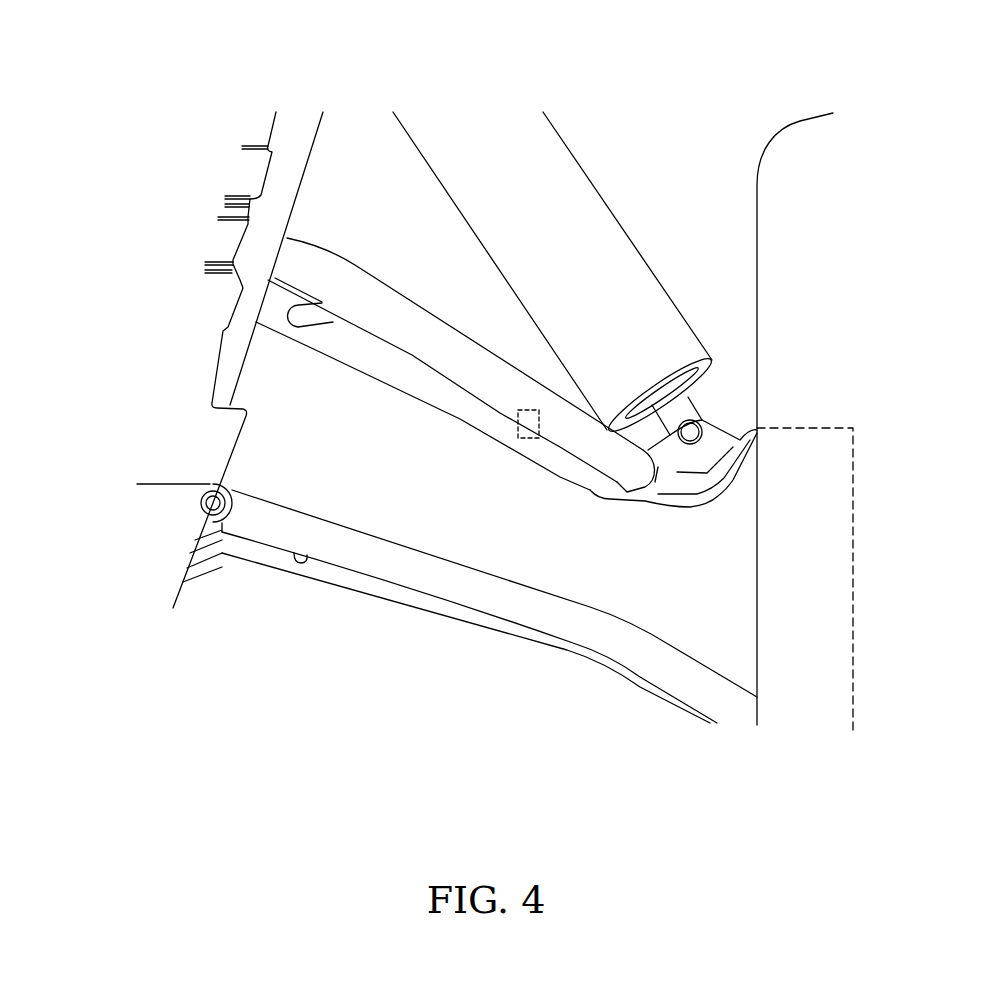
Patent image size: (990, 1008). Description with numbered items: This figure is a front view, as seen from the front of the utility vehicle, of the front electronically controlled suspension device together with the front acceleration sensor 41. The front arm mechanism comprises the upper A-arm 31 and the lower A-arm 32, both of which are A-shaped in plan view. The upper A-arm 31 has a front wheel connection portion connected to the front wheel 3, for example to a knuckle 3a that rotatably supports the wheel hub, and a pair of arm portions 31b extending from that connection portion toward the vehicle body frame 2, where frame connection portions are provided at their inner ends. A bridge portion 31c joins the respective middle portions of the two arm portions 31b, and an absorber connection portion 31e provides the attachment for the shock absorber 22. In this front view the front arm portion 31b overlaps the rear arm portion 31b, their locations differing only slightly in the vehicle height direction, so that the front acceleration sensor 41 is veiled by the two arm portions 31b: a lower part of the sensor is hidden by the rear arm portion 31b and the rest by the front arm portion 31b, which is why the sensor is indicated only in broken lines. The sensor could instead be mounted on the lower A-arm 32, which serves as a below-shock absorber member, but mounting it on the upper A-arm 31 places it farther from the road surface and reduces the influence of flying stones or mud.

The vehicle body frame 2 is at (248, 246).
The front wheel 3 is at (815, 113).
The knuckle 3a is at (853, 662).
The shock absorber 22 is at (590, 205).
The upper A-arm 31 is at (594, 500).
The arm portion 31b is at (448, 326).
The bridge portion 31c is at (330, 327).
The absorber connection portion 31e is at (695, 463).
The lower A-arm 32 is at (563, 653).
The front acceleration sensor 41 is at (530, 440).